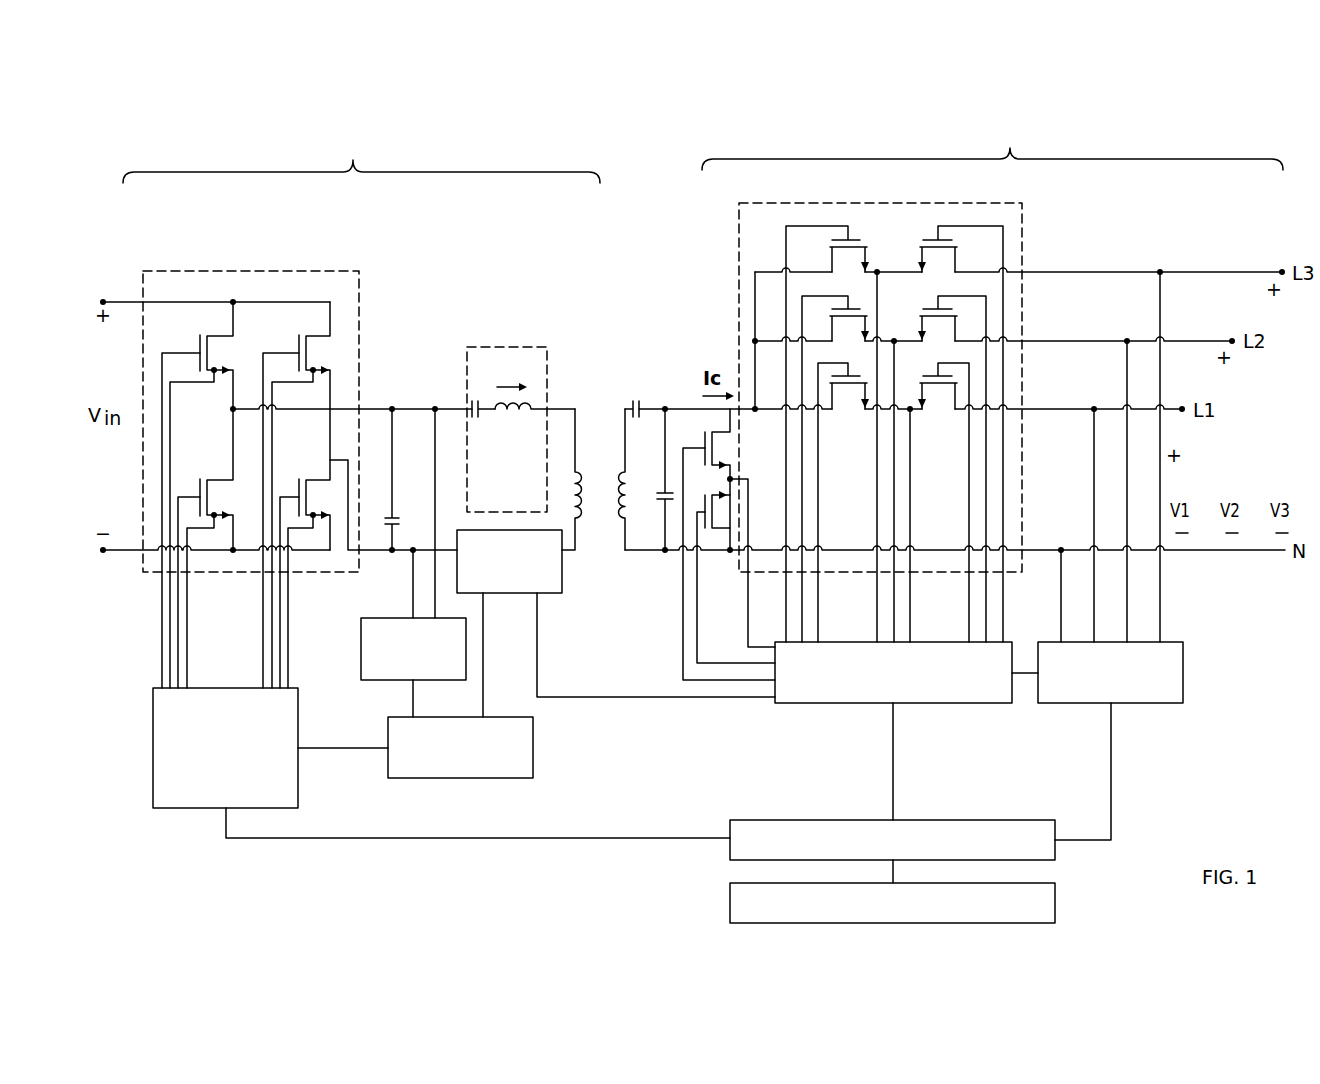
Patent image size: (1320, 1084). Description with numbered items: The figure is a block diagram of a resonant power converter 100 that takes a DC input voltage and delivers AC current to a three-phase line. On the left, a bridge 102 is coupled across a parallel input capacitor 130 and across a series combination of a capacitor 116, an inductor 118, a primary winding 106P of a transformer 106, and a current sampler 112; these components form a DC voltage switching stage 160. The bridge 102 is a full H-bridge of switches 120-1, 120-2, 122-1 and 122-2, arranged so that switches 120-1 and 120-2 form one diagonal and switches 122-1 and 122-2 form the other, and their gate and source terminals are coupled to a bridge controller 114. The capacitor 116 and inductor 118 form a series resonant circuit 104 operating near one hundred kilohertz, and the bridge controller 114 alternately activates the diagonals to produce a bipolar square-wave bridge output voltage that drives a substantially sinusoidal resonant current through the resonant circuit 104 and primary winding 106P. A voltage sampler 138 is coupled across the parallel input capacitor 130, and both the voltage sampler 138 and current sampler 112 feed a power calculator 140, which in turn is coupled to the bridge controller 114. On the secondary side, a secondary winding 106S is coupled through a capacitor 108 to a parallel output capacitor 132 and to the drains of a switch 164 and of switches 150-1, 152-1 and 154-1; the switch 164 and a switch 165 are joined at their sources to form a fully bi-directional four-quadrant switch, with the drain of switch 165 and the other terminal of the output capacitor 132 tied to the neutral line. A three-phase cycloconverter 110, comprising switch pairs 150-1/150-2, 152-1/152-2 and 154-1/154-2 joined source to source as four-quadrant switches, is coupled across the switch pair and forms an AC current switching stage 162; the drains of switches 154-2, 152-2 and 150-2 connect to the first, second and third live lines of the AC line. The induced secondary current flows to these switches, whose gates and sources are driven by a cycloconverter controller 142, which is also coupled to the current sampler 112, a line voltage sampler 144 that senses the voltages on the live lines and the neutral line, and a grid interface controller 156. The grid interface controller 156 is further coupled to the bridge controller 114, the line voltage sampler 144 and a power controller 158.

The resonant power converter 100 is at (665, 141).
The bridge 102 is at (164, 271).
The resonant circuit 104 is at (519, 347).
The transformer 106 is at (603, 414).
The primary winding 106P is at (584, 530).
The secondary winding 106S is at (634, 526).
The capacitor 108 is at (630, 398).
The cycloconverter 110 is at (958, 202).
The current sampler 112 is at (509, 598).
The bridge controller 114 is at (237, 688).
The capacitor 116 is at (477, 416).
The inductor 118 is at (512, 416).
The switch 120-1 is at (212, 336).
The switch 120-2 is at (318, 520).
The switch 122-1 is at (310, 336).
The switch 122-2 is at (200, 492).
The parallel input capacitor 130 is at (385, 519).
The parallel output capacitor 132 is at (658, 492).
The voltage sampler 138 is at (361, 648).
The power calculator 140 is at (533, 732).
The cycloconverter controller 142 is at (848, 641).
The line voltage sampler 144 is at (1152, 703).
The switch 150-1 is at (830, 258).
The switch 150-2 is at (955, 258).
The switch 152-1 is at (830, 327).
The switch 152-2 is at (955, 327).
The switch 154-1 is at (846, 400).
The switch 154-2 is at (938, 400).
The grid interface controller 156 is at (757, 820).
The power controller 158 is at (1055, 897).
The DC voltage switching stage 160 is at (361, 156).
The AC current switching stage 162 is at (992, 142).
The switch 164 is at (725, 448).
The switch 165 is at (725, 510).